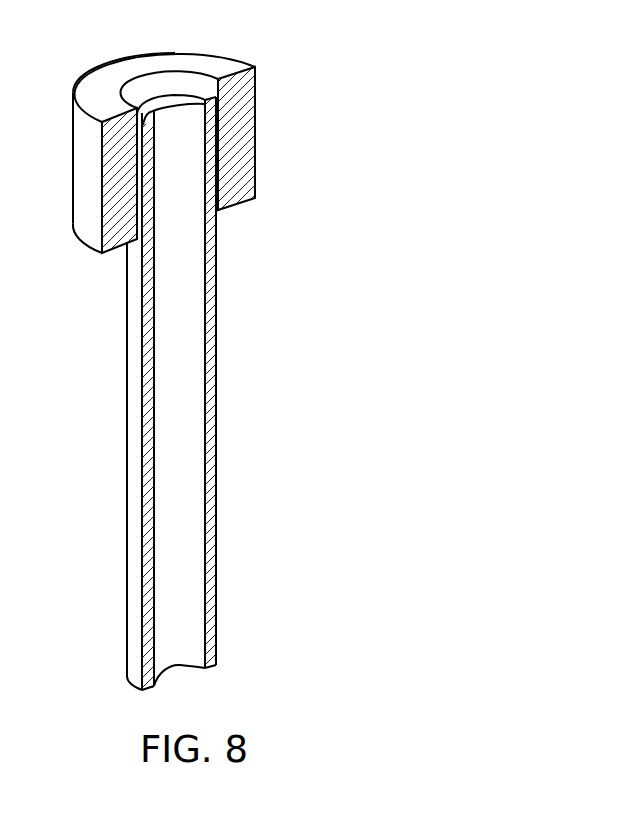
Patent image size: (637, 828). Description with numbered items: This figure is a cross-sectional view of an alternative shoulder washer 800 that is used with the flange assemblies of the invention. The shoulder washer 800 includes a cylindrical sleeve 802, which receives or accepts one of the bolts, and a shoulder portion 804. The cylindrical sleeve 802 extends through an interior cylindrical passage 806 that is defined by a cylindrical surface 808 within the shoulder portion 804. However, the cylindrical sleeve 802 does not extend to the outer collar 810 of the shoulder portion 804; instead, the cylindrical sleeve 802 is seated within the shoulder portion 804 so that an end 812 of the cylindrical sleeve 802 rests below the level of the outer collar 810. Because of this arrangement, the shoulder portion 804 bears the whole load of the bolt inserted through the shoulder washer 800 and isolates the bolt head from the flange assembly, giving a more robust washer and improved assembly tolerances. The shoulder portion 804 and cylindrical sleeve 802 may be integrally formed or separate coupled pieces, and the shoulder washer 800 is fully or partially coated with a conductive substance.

The shoulder washer 800 is at (318, 400).
The cylindrical sleeve 802 is at (218, 315).
The shoulder portion 804 is at (254, 84).
The interior cylindrical passage 806 is at (201, 77).
The cylindrical surface 808 is at (172, 83).
The outer collar 810 is at (98, 82).
The end 812 is at (207, 93).